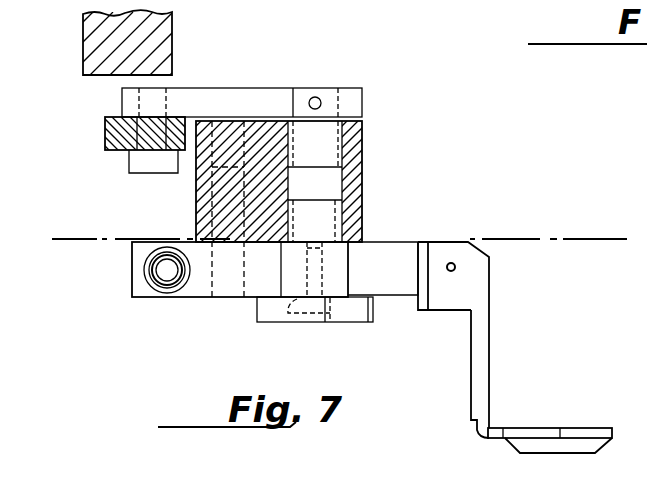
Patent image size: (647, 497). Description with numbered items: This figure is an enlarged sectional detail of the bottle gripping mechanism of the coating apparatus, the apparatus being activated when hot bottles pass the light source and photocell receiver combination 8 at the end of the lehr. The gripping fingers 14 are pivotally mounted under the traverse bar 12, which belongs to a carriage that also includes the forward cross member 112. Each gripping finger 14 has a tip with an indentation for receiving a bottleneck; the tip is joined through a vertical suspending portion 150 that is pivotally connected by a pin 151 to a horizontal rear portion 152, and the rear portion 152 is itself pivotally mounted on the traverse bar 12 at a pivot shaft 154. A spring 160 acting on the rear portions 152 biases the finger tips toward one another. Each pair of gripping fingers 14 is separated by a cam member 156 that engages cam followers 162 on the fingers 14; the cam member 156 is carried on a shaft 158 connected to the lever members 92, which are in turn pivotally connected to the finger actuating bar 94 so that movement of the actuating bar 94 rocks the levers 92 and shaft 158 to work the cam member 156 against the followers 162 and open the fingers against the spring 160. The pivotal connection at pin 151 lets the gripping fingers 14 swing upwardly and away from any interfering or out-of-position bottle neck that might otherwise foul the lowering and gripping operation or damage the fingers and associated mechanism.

The light source and photocell receiver combination 8 is at (68, 225).
The forward cross member 112 is at (160, 40).
The lever members 92 is at (273, 99).
The finger actuating bar 94 is at (118, 129).
The traverse bar 12 is at (357, 177).
The pivot shafts 154 is at (229, 125).
The shaft 158 is at (323, 142).
The horizontal rear portions 152 is at (200, 285).
The spring 160 is at (150, 283).
The cam member 156 is at (352, 312).
The cam followers 162 is at (290, 333).
The vertical suspending portions 150 is at (480, 365).
The pin 151 is at (454, 262).
The gripping fingers 14 is at (595, 430).